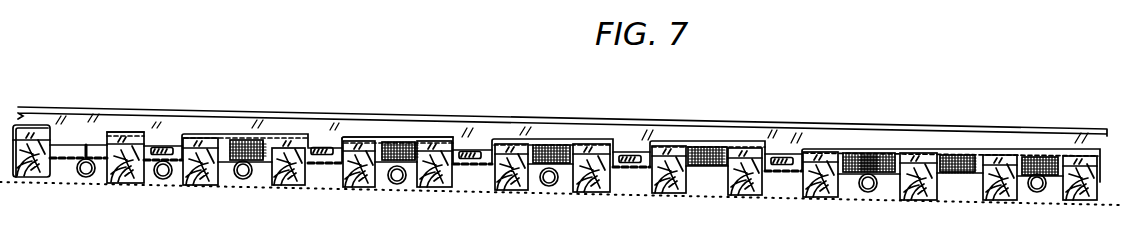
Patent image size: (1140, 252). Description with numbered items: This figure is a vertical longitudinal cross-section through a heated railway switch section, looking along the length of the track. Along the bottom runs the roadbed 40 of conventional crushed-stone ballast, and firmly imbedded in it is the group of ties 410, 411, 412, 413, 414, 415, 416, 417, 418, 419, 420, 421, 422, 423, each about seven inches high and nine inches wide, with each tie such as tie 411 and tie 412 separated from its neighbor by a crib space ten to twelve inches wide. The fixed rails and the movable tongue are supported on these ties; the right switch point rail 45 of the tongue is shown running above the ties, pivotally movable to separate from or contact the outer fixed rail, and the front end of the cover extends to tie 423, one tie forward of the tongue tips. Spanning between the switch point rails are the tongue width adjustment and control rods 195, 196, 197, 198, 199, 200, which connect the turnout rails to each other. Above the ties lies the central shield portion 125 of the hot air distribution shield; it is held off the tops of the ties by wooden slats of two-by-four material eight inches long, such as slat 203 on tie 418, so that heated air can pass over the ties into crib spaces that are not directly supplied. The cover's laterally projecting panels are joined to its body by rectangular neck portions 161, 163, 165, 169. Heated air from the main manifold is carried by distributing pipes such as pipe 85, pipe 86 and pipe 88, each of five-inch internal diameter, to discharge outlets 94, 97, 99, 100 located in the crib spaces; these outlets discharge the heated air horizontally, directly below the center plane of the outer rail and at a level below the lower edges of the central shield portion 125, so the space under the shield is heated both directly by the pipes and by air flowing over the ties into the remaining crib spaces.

The right switch point rail 45 is at (1044, 142).
The roadbed 40 is at (488, 184).
The wooden slat 203 is at (438, 145).
The central shield portion 125 is at (928, 150).
The tongue width adjustment and control rod 200 is at (86, 146).
The tongue width adjustment and control rod 199 is at (163, 148).
The tongue width adjustment and control rod 198 is at (319, 149).
The tongue width adjustment and control rod 197 is at (473, 152).
The tongue width adjustment and control rod 196 is at (627, 154).
The tongue width adjustment and control rod 195 is at (780, 158).
The rectangular neck portion 161 is at (398, 146).
The rectangular neck portion 163 is at (546, 145).
The rectangular neck portion 165 is at (560, 143).
The rectangular neck portion 169 is at (705, 170).
The discharge outlet 100 is at (80, 177).
The discharge outlet 99 is at (166, 179).
The distributing pipe 88 is at (246, 179).
The discharge outlet 97 is at (396, 184).
The distributing pipe 86 is at (551, 186).
The distributing pipe 85 is at (868, 193).
The discharge outlet 94 is at (1037, 193).
The tie 423 is at (33, 179).
The tie 422 is at (124, 182).
The tie 421 is at (200, 186).
The tie 420 is at (288, 186).
The tie 419 is at (362, 186).
The tie 418 is at (438, 188).
The tie 417 is at (510, 190).
The tie 416 is at (590, 194).
The tie 415 is at (670, 195).
The tie 414 is at (746, 196).
The tie 413 is at (813, 198).
The tie 412 is at (926, 201).
The tie 411 is at (993, 201).
The tie 410 is at (1086, 201).